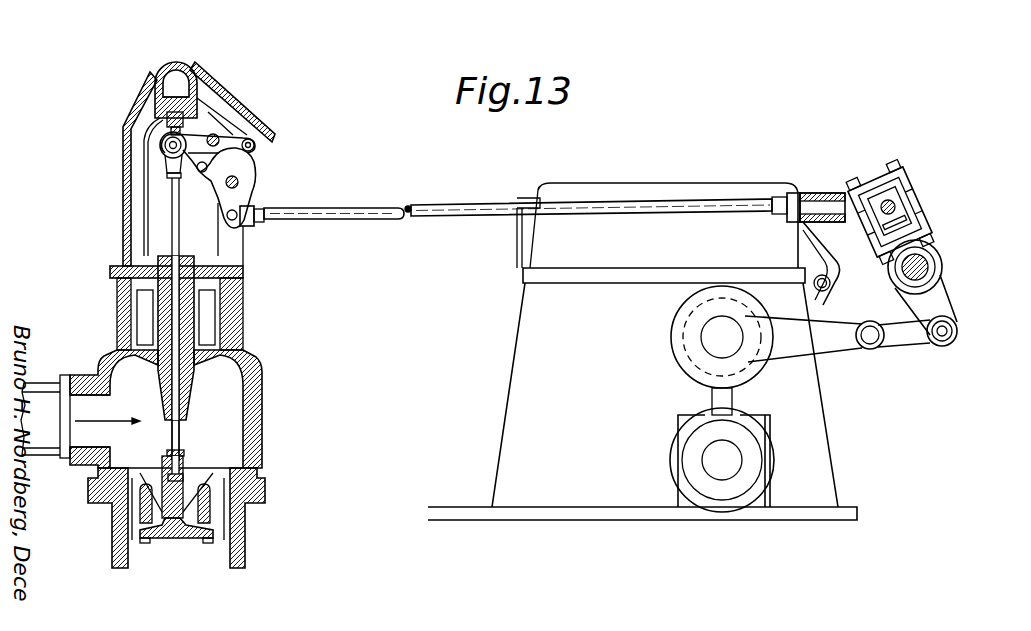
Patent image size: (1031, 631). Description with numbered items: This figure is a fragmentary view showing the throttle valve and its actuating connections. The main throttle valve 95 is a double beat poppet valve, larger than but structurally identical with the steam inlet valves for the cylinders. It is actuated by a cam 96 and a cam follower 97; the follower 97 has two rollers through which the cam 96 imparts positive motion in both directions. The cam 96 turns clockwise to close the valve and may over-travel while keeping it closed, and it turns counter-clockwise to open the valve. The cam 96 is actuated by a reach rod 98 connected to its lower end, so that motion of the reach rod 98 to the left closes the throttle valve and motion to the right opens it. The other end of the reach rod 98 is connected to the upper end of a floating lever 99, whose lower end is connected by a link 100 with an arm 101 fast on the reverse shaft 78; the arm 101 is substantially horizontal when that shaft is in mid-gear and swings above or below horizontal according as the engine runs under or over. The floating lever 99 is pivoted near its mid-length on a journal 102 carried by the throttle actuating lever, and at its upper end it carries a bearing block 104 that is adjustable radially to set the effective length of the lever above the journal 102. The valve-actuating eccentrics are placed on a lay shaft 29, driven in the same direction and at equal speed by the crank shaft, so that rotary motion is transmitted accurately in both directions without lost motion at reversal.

The lay shaft 29 is at (742, 460).
The reverse shaft 78 is at (705, 332).
The main throttle valve 95 is at (250, 342).
The cam 96 is at (246, 167).
The cam follower 97 is at (235, 142).
The reach rod 98 is at (458, 217).
The floating lever 99 is at (903, 192).
The link 100 is at (902, 338).
The arm 101 is at (840, 348).
The journal 102 is at (930, 267).
The bearing block 104 is at (885, 217).